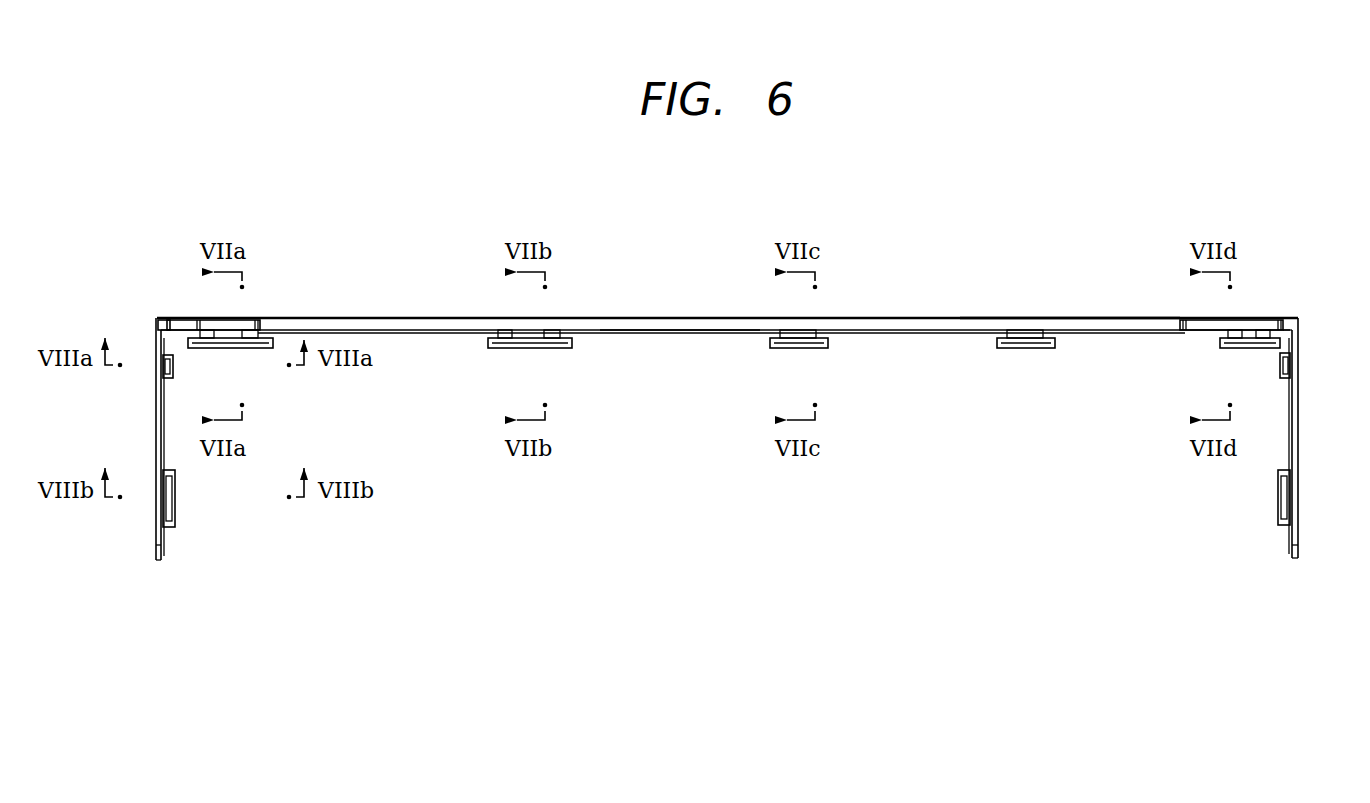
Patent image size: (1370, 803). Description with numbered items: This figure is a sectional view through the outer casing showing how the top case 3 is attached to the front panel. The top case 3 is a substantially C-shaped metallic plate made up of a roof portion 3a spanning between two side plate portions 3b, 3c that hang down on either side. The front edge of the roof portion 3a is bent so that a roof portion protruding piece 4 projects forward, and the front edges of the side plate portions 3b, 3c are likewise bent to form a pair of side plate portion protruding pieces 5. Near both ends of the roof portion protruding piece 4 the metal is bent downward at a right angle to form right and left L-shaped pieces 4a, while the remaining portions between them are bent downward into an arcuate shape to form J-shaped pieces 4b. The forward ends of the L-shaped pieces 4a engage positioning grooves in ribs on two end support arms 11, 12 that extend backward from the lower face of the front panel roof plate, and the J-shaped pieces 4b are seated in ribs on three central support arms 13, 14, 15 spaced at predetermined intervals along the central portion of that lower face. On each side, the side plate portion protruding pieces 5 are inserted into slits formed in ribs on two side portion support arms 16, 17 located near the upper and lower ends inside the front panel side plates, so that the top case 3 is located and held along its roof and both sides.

The top case 3 is at (886, 316).
The roof portion 3a is at (948, 320).
The side plate portion 3b is at (156, 560).
The side plate portion 3c is at (1298, 558).
The roof portion protruding piece 4 is at (692, 338).
The L-shaped piece 4a is at (232, 334).
The J-shaped piece 4b is at (178, 322).
The side plate portion protruding piece 5 is at (163, 556).
The end support arm 11 is at (228, 350).
The end support arm 12 is at (1240, 350).
The central support arm 13 is at (533, 350).
The central support arm 14 is at (797, 350).
The central support arm 15 is at (1030, 350).
The side portion support arm 16 is at (176, 366).
The side portion support arm 17 is at (176, 498).